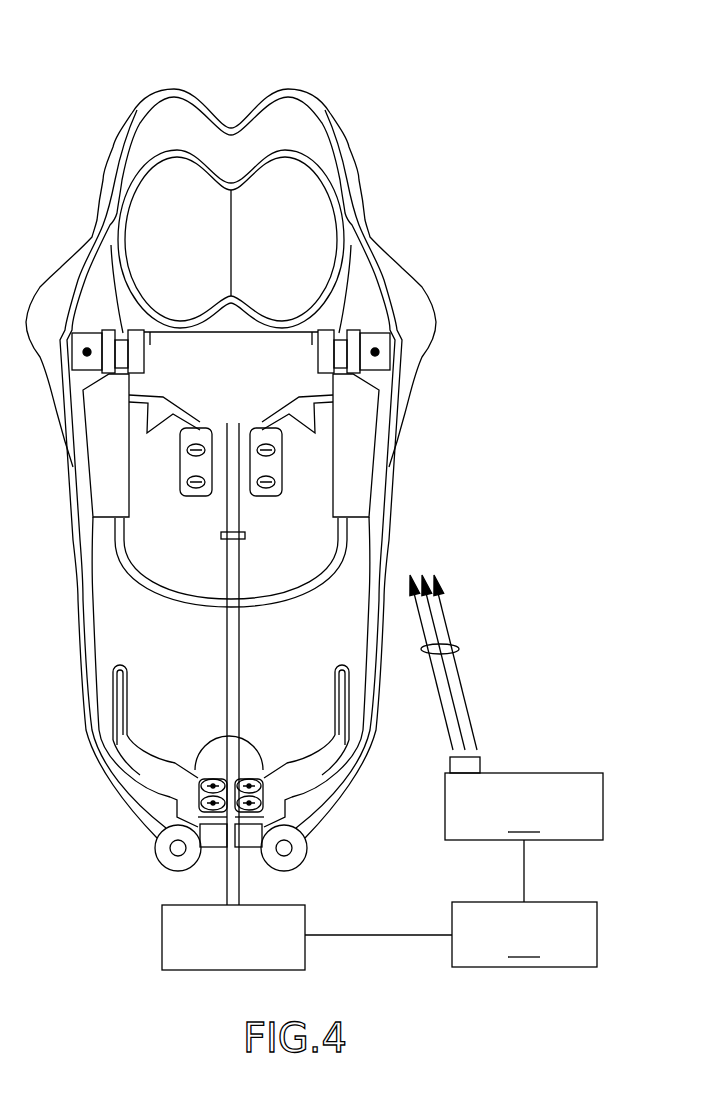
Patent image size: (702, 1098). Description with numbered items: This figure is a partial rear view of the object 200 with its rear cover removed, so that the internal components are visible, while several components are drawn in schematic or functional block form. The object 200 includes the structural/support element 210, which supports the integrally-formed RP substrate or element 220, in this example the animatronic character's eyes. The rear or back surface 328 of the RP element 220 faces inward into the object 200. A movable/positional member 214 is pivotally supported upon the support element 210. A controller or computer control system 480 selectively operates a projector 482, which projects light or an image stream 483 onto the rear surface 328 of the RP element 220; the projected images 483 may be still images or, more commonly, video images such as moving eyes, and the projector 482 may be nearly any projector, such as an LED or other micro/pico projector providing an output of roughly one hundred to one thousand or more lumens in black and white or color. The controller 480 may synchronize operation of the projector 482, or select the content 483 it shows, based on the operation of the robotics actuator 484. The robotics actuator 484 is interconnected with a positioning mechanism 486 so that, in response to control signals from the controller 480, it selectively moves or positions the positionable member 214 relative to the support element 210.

The object 200 is at (470, 98).
The structural/support element 210 is at (423, 283).
The movable/positional member 214 is at (157, 587).
The RP substrate or element 220 is at (305, 146).
The rear or back surface 328 is at (297, 217).
The controller or computer control system 480 is at (451, 934).
The projector 482 is at (524, 829).
The projected light or image stream 483 is at (459, 649).
The robotics actuator 484 is at (162, 937).
The positioning mechanism 486 is at (181, 526).